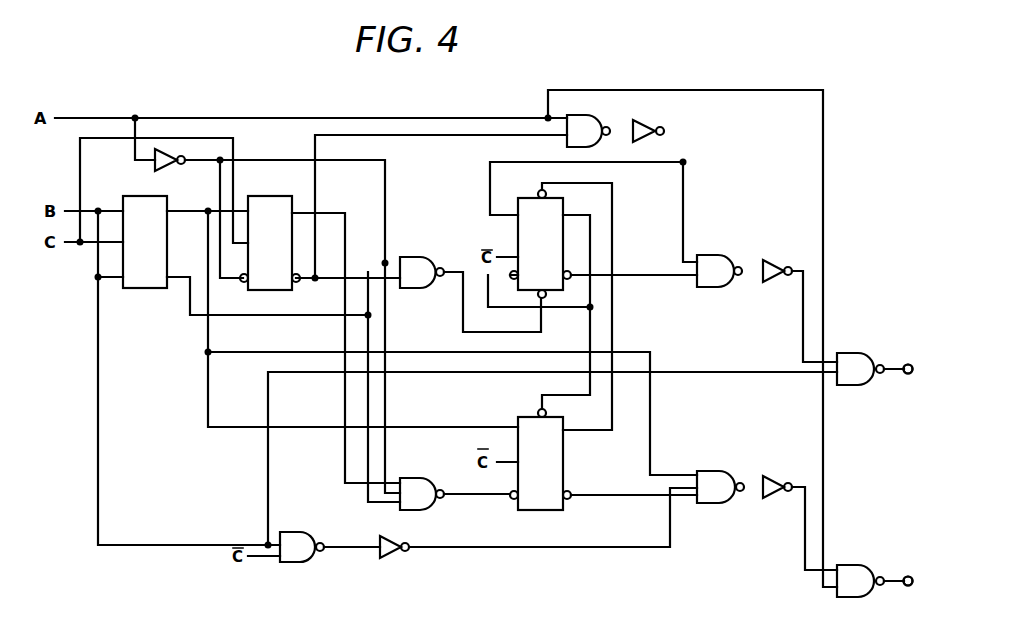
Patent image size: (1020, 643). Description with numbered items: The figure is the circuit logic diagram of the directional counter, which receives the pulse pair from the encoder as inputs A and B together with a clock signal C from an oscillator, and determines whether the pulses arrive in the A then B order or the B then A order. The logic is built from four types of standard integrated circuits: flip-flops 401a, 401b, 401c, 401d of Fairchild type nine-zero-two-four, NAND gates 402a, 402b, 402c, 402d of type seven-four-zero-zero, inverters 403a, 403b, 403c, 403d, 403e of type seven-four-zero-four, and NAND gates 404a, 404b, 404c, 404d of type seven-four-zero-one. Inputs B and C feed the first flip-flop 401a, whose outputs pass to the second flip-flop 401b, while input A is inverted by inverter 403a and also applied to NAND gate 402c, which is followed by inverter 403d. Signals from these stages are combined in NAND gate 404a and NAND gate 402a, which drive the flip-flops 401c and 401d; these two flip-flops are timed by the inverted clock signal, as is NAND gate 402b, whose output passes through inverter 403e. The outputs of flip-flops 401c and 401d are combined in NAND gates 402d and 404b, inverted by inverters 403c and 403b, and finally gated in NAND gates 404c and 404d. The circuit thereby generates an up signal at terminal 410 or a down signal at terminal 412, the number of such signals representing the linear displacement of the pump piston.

The flip-flop 401a is at (155, 289).
The flip-flop 401b is at (266, 196).
The flip-flop 401c is at (518, 238).
The flip-flop 401d is at (564, 462).
The NAND gate 402a is at (430, 509).
The NAND gate 402b is at (311, 562).
The NAND gate 402c is at (567, 142).
The NAND gate 402d is at (716, 288).
The inverter 403a is at (152, 168).
The inverter 403b is at (773, 499).
The inverter 403c is at (770, 260).
The inverter 403d is at (648, 122).
The inverter 403e is at (392, 558).
The NAND gate 404a is at (412, 257).
The NAND gate 404b is at (712, 471).
The NAND gate 404c is at (843, 353).
The NAND gate 404d is at (852, 565).
The terminal 410 is at (906, 374).
The terminal 412 is at (905, 586).